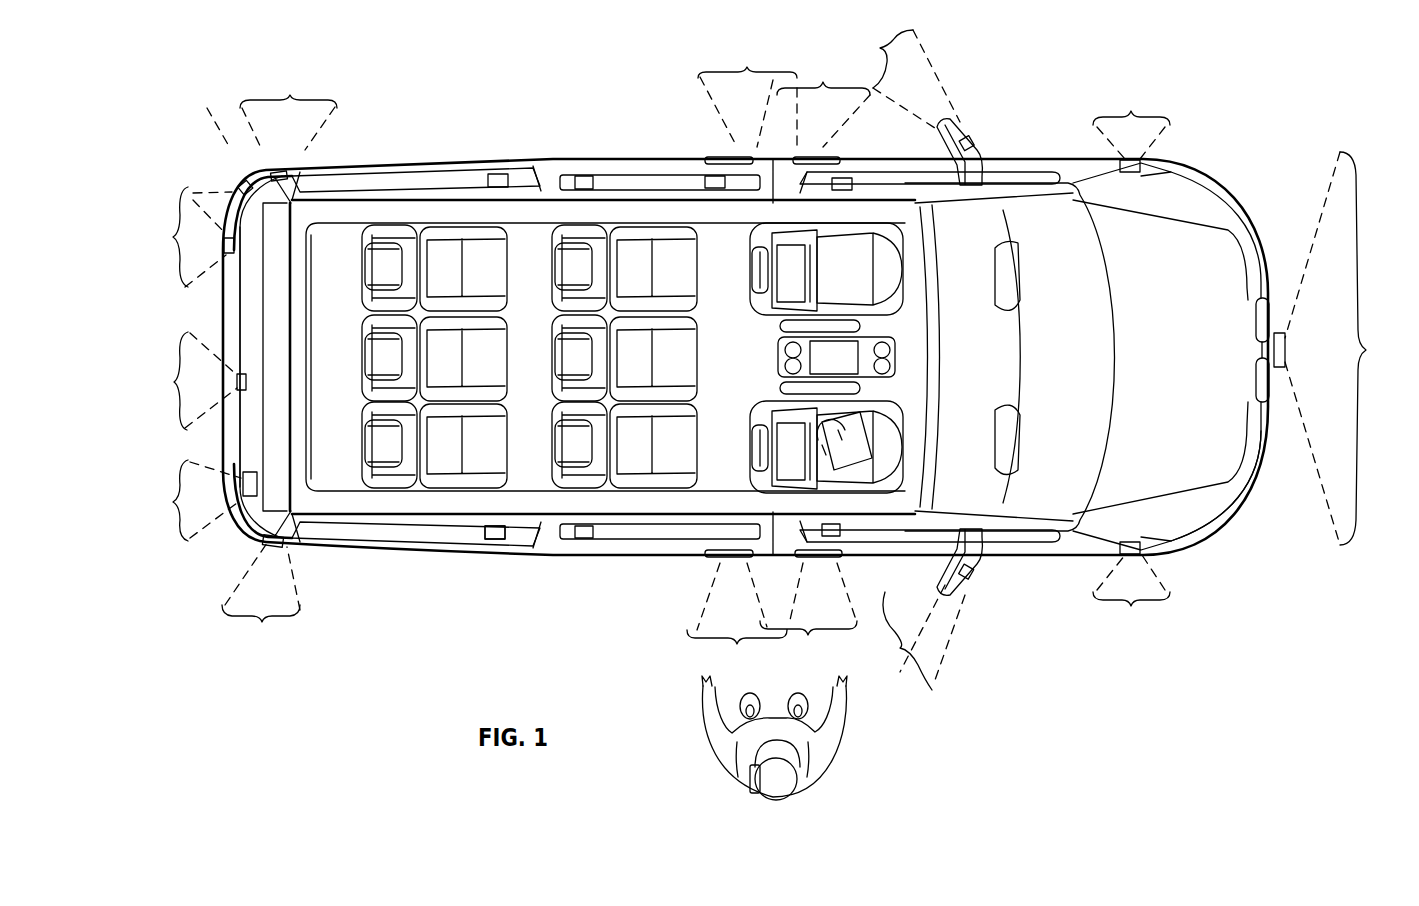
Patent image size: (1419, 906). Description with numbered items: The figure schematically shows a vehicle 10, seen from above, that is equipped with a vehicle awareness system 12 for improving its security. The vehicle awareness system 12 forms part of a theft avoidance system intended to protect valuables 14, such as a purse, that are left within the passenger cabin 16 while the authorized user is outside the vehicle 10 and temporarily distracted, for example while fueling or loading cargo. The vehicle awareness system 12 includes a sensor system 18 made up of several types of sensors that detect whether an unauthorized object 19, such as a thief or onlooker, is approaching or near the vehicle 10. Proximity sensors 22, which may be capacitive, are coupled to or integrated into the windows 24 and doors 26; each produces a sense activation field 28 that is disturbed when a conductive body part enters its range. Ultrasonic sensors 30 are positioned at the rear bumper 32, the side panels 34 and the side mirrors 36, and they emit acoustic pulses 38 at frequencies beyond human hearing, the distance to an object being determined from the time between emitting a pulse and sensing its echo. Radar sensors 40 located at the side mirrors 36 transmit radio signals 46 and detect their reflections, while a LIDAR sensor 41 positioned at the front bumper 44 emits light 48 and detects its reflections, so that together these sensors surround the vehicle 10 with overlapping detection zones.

The vehicle 10 is at (558, 87).
The vehicle awareness system 12 is at (682, 584).
The valuables 14 is at (865, 432).
The passenger cabin 16 is at (484, 468).
The sensor system 18 is at (492, 538).
The unauthorized object 19 is at (718, 776).
The proximity sensors 22 is at (498, 174).
The windows 24 is at (372, 182).
The doors 26 is at (663, 160).
The sense activation field 28 is at (778, 355).
The ultrasonic sensors 30 is at (240, 184).
The rear bumper 32 is at (236, 447).
The side panels 34 is at (332, 170).
The side mirrors 36 is at (986, 153).
The acoustic pulses 38 is at (655, 360).
The radar sensors 40 is at (966, 144).
The LIDAR sensor 41 is at (1288, 348).
The front bumper 44 is at (1258, 462).
The radio signals 46 is at (908, 360).
The light 48 is at (1342, 348).